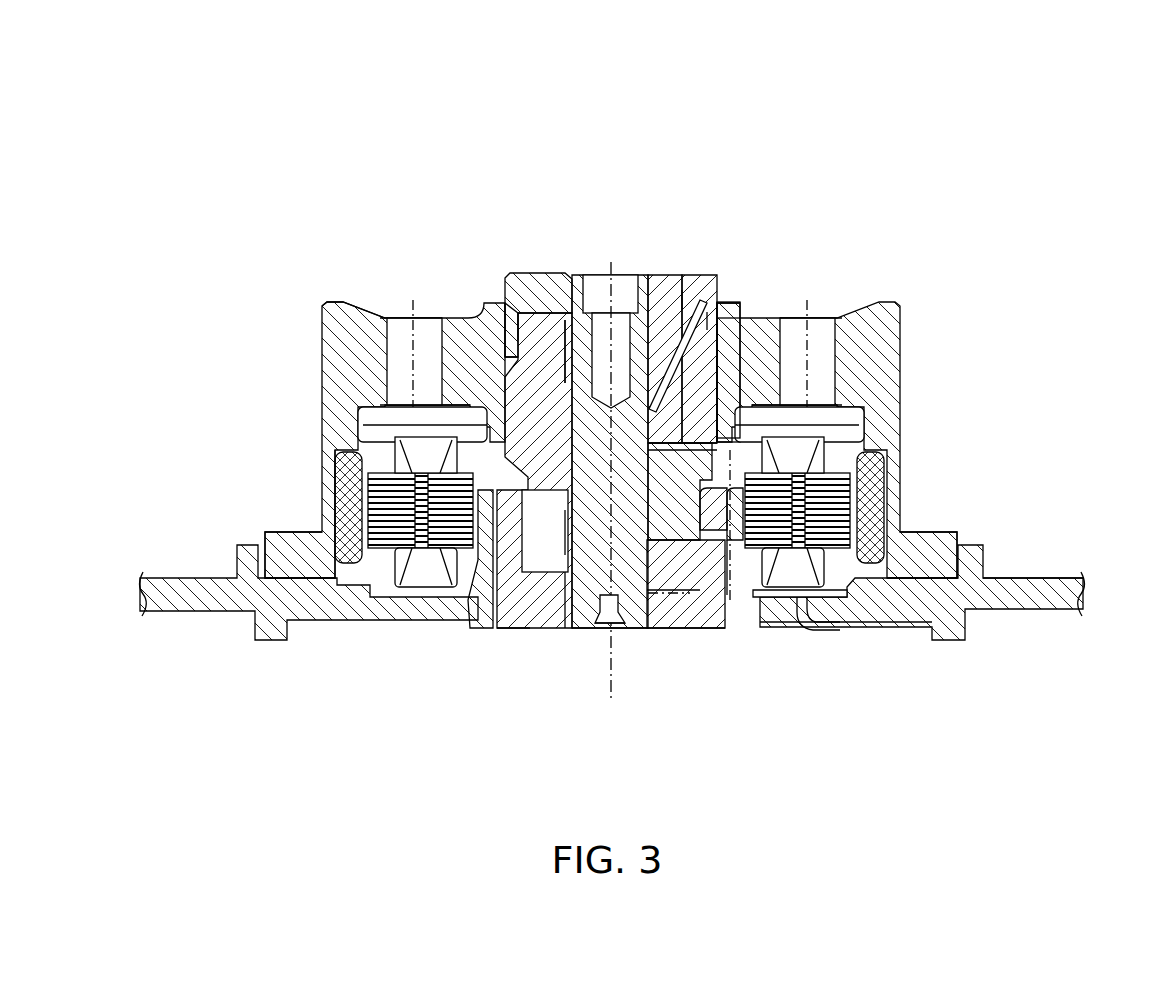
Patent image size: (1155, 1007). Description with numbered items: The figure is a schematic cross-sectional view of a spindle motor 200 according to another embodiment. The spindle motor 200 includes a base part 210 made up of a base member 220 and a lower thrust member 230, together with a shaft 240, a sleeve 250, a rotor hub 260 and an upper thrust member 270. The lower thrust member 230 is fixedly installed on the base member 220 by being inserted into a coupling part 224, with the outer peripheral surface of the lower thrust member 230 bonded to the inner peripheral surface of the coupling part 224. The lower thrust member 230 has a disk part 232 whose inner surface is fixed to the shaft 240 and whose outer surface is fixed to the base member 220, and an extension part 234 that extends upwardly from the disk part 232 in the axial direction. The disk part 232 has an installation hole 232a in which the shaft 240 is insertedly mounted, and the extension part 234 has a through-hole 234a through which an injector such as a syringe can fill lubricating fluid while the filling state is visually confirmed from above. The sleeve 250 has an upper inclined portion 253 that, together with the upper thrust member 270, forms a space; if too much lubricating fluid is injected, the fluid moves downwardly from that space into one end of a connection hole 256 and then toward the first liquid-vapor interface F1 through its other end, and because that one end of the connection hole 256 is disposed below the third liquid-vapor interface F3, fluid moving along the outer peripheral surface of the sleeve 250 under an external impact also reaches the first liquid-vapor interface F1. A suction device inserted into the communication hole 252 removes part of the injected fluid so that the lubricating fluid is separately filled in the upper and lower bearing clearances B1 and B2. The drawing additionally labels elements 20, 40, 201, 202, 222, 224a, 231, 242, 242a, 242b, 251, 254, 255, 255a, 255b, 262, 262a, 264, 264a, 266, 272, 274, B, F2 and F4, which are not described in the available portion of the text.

The spindle motor 200 is at (573, 58).
The base member 20 is at (1025, 645).
The cover 40 is at (322, 298).
The coil 201 is at (392, 505).
The core 202 is at (427, 580).
The base part 210 is at (315, 749).
The base member 220 is at (345, 600).
The terminal plate 222 is at (893, 627).
The coupling part 224 is at (842, 620).
The lead wire end 224a is at (805, 600).
The lower thrust member 230 is at (508, 700).
The shaft 231 is at (606, 275).
The disk part 232 is at (513, 618).
The installation hole 232a is at (667, 540).
The extension part 234 is at (480, 600).
The through-hole 234a is at (757, 620).
The shaft 240 is at (632, 540).
The rotor hub wall 242 is at (696, 300).
The rotor hub upper portion 242a is at (757, 345).
The rotor hub lower portion 242b is at (735, 600).
The sleeve 250 is at (703, 540).
The hub flange 251 is at (643, 540).
The communication hole 252 is at (835, 440).
The upper inclined portion 253 is at (518, 335).
The damper 254 is at (342, 456).
The stopper 255 is at (610, 140).
The inner stopper portion 255a is at (582, 275).
The outer stopper portion 255b is at (670, 275).
The connection hole 256 is at (735, 330).
The rotor hub 260 is at (1038, 252).
The fastening hole 262 is at (862, 302).
The fastening hole 262a is at (455, 370).
The housing body 264 is at (890, 497).
The housing leg 264a is at (338, 490).
The housing flange 266 is at (923, 545).
The upper thrust member 270 is at (495, 194).
The cap inner part 272 is at (565, 273).
The cap outer part 274 is at (510, 273).
The bearing gap B is at (710, 320).
The upper bearing clearance B1 is at (500, 425).
The lower bearing clearance B2 is at (546, 540).
The first liquid-vapor interface F1 is at (690, 300).
The second fluid interface F2 is at (577, 540).
The third liquid-vapor interface F3 is at (530, 320).
The fourth fluid interface F4 is at (550, 540).